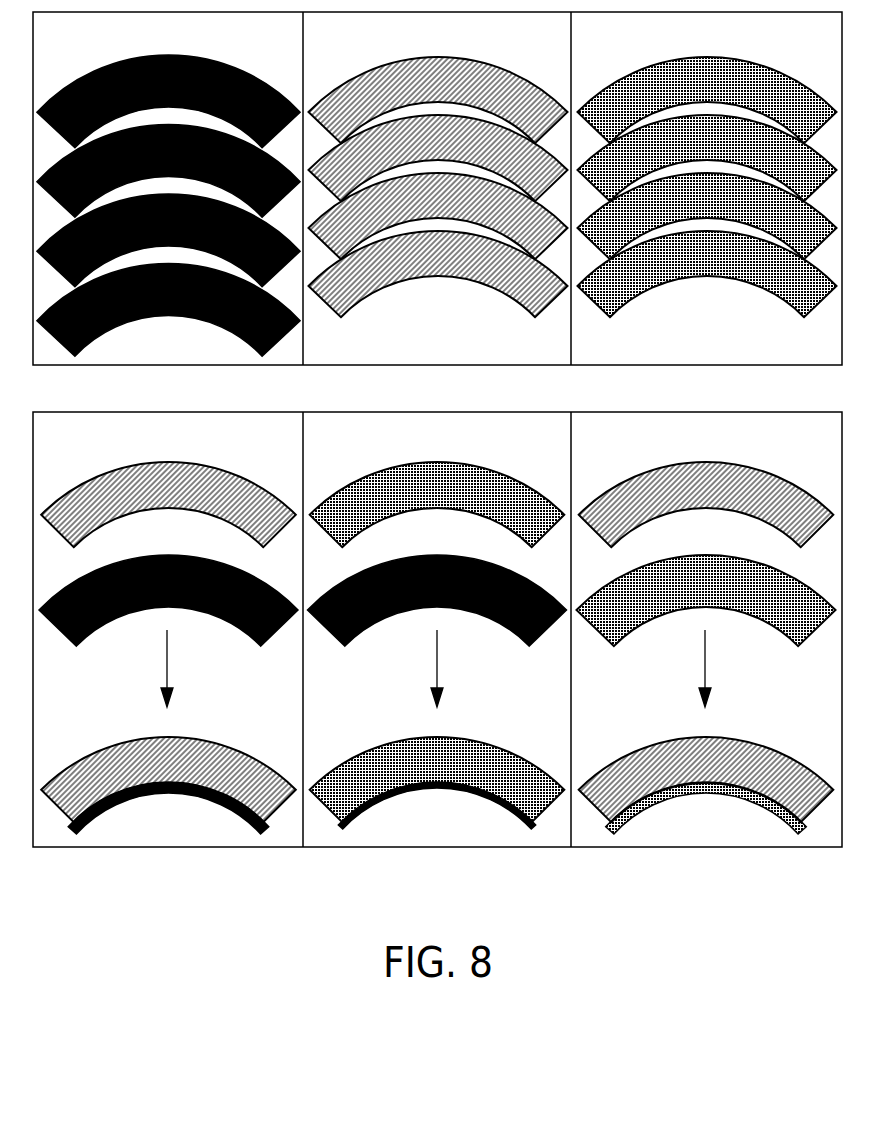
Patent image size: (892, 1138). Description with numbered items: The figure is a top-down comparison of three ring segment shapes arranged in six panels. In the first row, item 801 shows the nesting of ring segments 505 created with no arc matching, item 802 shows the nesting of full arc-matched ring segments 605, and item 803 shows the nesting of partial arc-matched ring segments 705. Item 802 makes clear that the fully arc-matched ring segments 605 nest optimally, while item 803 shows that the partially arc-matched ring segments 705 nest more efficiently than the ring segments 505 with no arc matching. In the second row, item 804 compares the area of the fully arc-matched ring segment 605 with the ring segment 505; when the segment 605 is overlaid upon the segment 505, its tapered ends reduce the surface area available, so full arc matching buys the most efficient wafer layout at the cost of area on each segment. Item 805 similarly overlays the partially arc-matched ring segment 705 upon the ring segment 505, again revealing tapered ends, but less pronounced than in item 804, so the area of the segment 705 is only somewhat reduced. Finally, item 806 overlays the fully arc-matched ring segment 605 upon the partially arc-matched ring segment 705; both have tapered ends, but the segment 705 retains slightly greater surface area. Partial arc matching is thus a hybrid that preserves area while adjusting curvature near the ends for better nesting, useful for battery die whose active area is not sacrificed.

The nesting of non-arc-matched ring segments 801 is at (168, 184).
The nesting of full arc-matched ring segments 802 is at (438, 164).
The nesting of partial arc-matched ring segments 803 is at (707, 164).
The area comparison of fully arc-matched and non-arc-matched ring segments 804 is at (168, 623).
The area comparison of partially arc-matched and non-arc-matched ring segments 805 is at (437, 621).
The area comparison of fully and partially arc-matched ring segments 806 is at (706, 623).
The ring segment with no arc matching 505 is at (260, 55).
The full arc-matched ring segment 605 is at (477, 90).
The partial arc-matched ring segment 705 is at (750, 88).